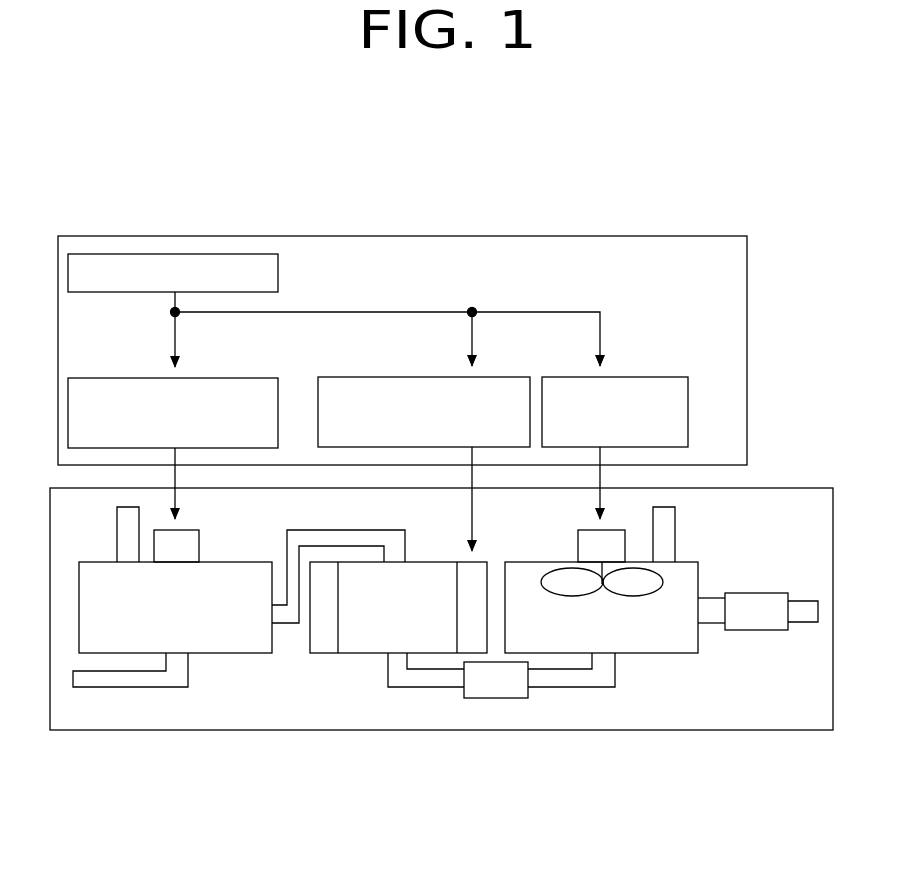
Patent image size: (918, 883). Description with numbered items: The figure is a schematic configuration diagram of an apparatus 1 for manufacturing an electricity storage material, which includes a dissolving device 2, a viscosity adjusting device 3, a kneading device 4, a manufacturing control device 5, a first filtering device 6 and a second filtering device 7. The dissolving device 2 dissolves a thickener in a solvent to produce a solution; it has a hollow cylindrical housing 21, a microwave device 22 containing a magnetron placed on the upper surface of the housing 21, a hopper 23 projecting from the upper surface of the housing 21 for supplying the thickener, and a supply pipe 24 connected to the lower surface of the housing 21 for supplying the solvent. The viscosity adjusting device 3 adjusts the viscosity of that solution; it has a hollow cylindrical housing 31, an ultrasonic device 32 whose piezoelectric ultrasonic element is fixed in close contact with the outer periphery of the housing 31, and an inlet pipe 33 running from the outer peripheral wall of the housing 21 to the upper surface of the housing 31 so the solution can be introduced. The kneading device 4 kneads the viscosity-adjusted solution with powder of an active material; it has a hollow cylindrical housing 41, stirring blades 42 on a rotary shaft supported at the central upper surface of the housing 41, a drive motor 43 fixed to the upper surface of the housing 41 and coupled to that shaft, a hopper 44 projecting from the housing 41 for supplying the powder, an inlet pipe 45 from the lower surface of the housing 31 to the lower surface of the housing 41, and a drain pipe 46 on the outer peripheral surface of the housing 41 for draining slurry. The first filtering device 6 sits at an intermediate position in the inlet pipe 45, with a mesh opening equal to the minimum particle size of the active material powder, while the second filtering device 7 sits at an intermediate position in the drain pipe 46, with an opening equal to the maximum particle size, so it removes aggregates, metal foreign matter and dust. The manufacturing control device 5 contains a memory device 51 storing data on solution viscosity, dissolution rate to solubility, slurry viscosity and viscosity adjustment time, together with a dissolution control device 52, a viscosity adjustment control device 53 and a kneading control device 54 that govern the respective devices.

The apparatus for manufacturing an electricity storage material 1 is at (581, 170).
The dissolving device 2 is at (234, 681).
The viscosity adjusting device 3 is at (348, 678).
The kneading device 4 is at (684, 677).
The manufacturing control device 5 is at (661, 229).
The first filtering device 6 is at (493, 698).
The second filtering device 7 is at (750, 630).
The housing 21 is at (112, 562).
The microwave device 22 is at (188, 530).
The hopper 23 is at (117, 538).
The supply pipe 24 is at (153, 688).
The housing 31 is at (415, 562).
The ultrasonic device 32 is at (323, 656).
The inlet pipe 33 is at (372, 529).
The housing 41 is at (553, 562).
The stirring blades 42 is at (625, 595).
The drive motor 43 is at (590, 530).
The hopper 44 is at (675, 529).
The inlet pipe 45 is at (400, 687).
The drain pipe 46 is at (711, 624).
The memory device 51 is at (280, 276).
The dissolution control device 52 is at (262, 378).
The viscosity adjustment control device 53 is at (512, 377).
The kneading control device 54 is at (678, 377).